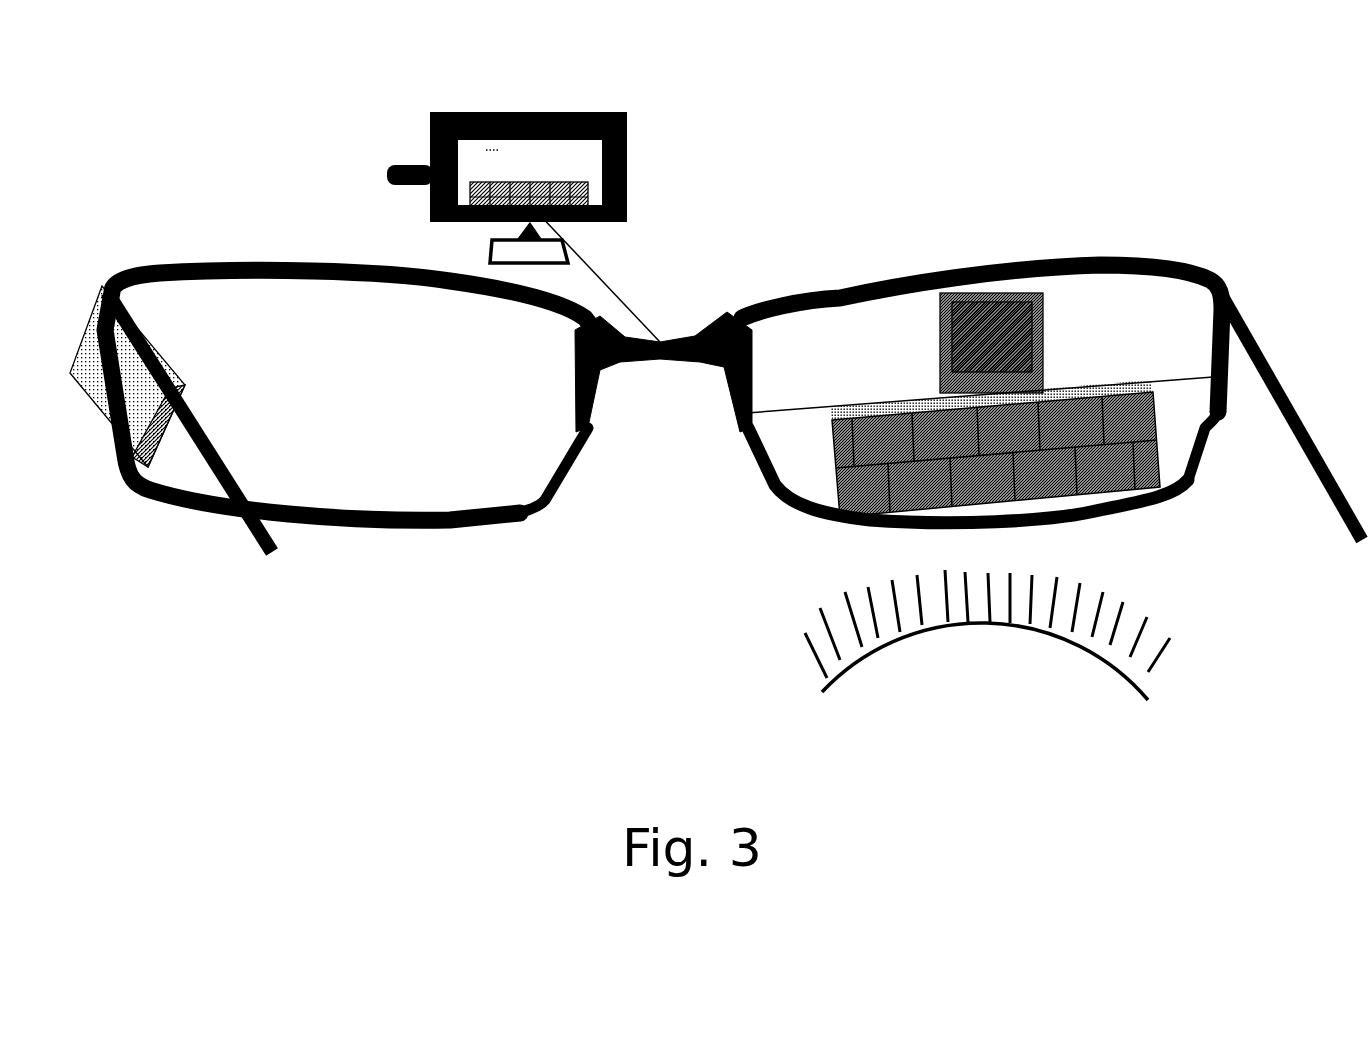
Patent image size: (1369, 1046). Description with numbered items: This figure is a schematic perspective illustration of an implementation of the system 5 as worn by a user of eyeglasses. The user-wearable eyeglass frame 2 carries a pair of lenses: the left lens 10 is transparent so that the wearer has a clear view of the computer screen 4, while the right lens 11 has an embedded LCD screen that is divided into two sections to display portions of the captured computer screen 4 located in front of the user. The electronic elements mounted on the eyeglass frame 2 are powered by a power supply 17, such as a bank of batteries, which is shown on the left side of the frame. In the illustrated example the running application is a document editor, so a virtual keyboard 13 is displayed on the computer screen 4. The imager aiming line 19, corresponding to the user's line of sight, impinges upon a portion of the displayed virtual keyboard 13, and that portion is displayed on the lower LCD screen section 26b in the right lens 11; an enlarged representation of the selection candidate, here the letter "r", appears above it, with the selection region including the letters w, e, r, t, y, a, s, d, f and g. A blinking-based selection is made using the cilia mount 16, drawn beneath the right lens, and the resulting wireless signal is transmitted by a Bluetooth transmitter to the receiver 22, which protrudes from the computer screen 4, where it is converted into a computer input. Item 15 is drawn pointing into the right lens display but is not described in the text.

The eyeglass frame 2 is at (287, 320).
The computer screen 4 is at (503, 107).
The system 5 is at (815, 165).
The left lens 10 is at (197, 315).
The right lens 11 is at (1230, 290).
The virtual keyboard 13 is at (585, 198).
The displayed image on lens 15 is at (830, 365).
The cilia mount 16 is at (972, 628).
The power supply 17 is at (93, 422).
The imager aiming line 19 is at (623, 294).
The receiver 22 is at (400, 160).
The lower LCD screen section 26b is at (795, 458).